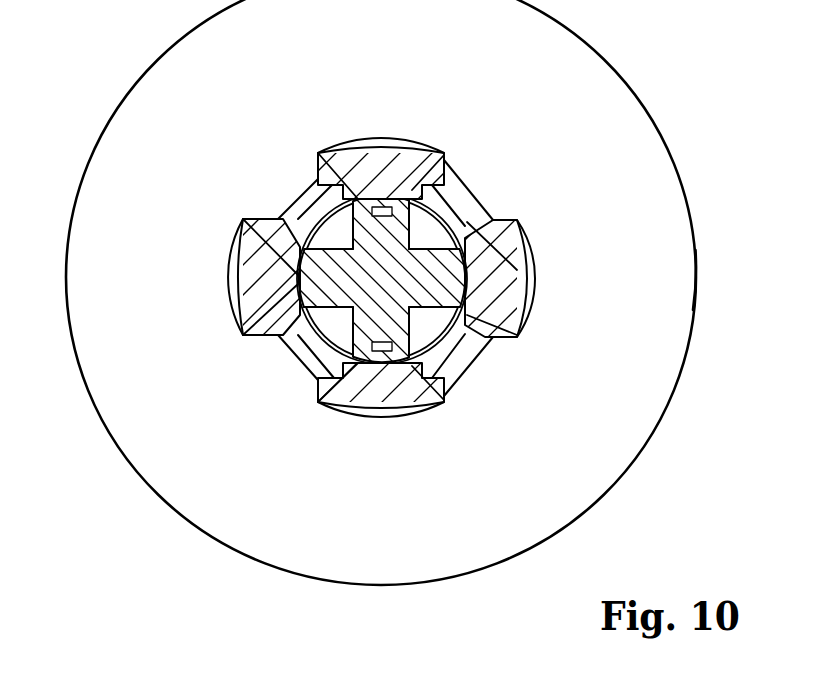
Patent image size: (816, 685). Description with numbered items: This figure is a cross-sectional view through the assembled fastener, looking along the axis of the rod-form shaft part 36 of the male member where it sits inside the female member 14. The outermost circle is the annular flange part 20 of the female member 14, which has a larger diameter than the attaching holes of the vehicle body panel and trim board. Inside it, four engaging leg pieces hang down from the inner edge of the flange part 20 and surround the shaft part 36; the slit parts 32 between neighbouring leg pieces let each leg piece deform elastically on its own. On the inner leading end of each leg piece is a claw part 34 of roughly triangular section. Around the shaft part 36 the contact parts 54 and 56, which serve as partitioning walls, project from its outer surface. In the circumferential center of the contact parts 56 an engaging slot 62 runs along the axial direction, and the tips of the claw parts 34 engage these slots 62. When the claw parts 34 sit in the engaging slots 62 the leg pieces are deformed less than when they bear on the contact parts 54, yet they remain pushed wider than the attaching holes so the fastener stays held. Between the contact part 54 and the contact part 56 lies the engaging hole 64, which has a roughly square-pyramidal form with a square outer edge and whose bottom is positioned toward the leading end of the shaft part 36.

The female member 14 is at (699, 211).
The flange part 20 is at (668, 327).
The claw part 34 is at (386, 158).
The slit parts 32 is at (330, 168).
The engaging hole 64 is at (322, 210).
The contact parts 56 is at (418, 204).
The contact parts 54 is at (325, 265).
The engaging slots 62 is at (389, 208).
The shaft part 36 is at (455, 372).